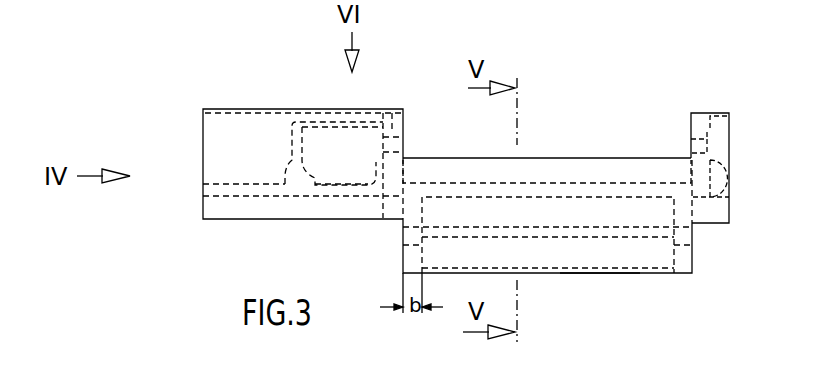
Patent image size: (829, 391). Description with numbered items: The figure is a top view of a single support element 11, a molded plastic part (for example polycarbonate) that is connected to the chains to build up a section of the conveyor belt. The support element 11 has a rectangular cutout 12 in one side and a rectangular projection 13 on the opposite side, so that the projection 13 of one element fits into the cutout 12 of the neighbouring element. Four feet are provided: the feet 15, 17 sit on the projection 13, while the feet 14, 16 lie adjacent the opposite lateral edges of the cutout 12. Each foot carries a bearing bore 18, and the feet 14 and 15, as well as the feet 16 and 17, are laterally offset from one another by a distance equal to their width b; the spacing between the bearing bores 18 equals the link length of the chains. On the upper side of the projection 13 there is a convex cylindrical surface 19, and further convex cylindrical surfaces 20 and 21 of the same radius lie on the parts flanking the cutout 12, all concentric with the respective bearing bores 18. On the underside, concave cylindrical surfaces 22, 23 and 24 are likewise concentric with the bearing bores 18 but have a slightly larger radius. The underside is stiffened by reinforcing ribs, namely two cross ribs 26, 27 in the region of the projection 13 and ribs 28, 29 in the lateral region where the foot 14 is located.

The support element 11 is at (227, 92).
The rectangular cutout 12 is at (652, 152).
The rectangular projection 13 is at (653, 257).
The foot 14 is at (392, 124).
The foot 15 is at (405, 254).
The foot 16 is at (702, 123).
The foot 17 is at (682, 262).
The bearing bore 18 is at (698, 151).
The convex cylindrical surface 19 is at (592, 257).
The convex cylindrical surface 20 is at (258, 128).
The convex cylindrical surface 21 is at (727, 117).
The concave cylindrical surface 22 is at (577, 172).
The concave cylindrical surface 23 is at (299, 207).
The concave cylindrical surface 24 is at (712, 208).
The cross rib 26 is at (548, 230).
The cross rib 27 is at (530, 193).
The rib 28 is at (227, 190).
The rib 29 is at (328, 125).